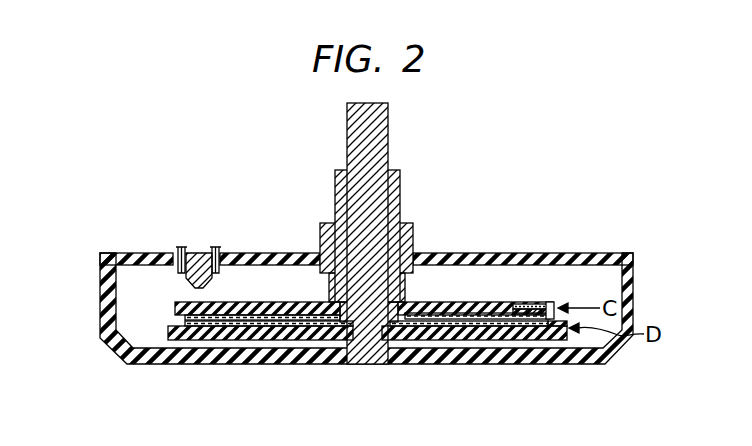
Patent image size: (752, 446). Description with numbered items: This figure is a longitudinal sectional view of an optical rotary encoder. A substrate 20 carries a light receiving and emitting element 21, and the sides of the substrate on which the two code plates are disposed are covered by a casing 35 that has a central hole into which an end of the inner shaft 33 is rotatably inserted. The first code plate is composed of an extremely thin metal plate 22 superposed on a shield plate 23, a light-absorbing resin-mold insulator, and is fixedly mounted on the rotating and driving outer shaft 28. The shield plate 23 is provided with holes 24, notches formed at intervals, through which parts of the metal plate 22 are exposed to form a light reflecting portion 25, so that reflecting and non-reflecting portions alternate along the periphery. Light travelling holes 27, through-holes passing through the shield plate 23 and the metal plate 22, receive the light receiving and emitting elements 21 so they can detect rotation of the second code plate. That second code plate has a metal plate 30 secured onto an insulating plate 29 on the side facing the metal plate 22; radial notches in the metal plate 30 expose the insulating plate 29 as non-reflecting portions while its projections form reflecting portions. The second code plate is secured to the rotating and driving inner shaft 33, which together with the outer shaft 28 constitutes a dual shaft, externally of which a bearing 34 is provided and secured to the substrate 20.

The substrate 20 is at (505, 255).
The light receiving and emitting element 21 is at (203, 268).
The metal plate 22 is at (553, 305).
The shield plate 23 is at (450, 302).
The holes 24 is at (536, 312).
The light reflecting portion 25 is at (524, 306).
The light travelling holes 27 is at (196, 303).
The outer shaft 28 is at (337, 178).
The insulating plate 29 is at (500, 327).
The metal plate 30 is at (448, 323).
The inner shaft 33 is at (350, 119).
The bearing 34 is at (326, 232).
The casing 35 is at (102, 312).